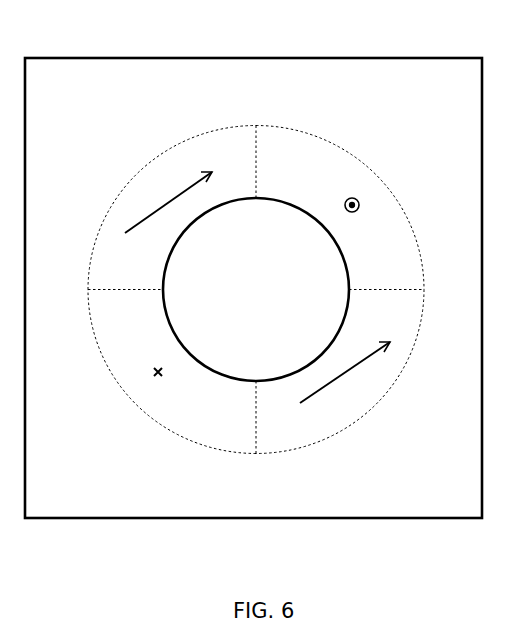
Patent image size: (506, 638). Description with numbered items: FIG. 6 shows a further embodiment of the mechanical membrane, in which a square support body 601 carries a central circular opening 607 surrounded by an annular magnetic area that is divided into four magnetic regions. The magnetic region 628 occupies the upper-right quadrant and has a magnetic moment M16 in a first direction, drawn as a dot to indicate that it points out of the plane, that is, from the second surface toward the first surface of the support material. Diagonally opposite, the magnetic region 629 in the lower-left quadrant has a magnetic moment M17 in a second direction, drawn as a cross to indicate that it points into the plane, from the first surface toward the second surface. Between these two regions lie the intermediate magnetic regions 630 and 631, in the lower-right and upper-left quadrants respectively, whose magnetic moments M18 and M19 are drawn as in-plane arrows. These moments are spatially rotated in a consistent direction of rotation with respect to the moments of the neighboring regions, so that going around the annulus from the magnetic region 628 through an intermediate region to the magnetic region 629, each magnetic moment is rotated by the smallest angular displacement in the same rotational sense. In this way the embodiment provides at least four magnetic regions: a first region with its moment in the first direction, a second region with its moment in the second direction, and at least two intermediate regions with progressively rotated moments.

The substrate / wafer 601 is at (341, 82).
The central region 607 is at (269, 298).
The magnetic region 628 is at (385, 257).
The magnetic region 629 is at (108, 337).
The intermediate magnetic region 630 is at (396, 343).
The intermediate magnetic region 631 is at (127, 250).
The magnetic moment M16 is at (360, 200).
The magnetic moment M17 is at (153, 375).
The magnetic moment M18 is at (350, 372).
The magnetic moment M19 is at (165, 200).